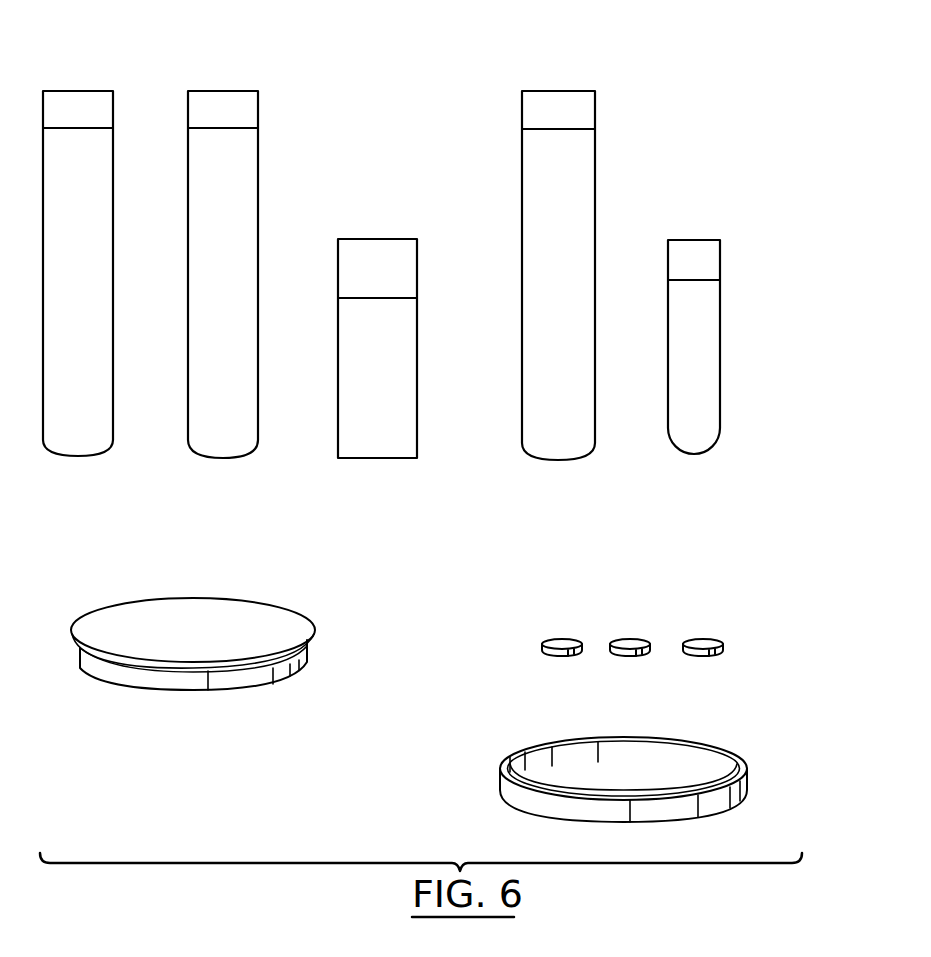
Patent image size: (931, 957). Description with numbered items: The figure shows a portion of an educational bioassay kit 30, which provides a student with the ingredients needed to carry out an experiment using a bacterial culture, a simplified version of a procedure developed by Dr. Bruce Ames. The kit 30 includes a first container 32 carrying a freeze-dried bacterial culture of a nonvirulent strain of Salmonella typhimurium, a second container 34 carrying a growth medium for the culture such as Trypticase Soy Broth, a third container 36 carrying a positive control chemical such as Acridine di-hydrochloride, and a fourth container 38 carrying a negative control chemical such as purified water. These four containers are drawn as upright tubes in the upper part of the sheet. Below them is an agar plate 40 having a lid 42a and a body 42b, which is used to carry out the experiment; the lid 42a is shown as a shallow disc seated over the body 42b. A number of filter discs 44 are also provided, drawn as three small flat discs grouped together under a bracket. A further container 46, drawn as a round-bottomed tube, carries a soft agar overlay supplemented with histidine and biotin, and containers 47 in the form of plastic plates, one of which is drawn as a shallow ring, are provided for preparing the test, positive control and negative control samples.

The kit 30 is at (741, 111).
The first container 32 is at (382, 239).
The second container 34 is at (563, 91).
The third container 36 is at (85, 91).
The fourth container 38 is at (227, 91).
The agar plate 40 is at (224, 624).
The lid 42a is at (300, 628).
The body 42b is at (281, 672).
The filter discs 44 is at (722, 606).
The containers 46 is at (697, 240).
The containers 47 is at (730, 737).